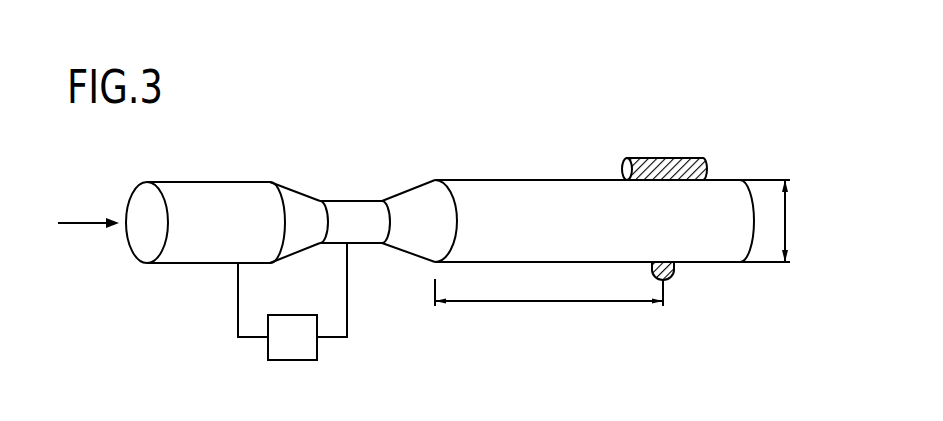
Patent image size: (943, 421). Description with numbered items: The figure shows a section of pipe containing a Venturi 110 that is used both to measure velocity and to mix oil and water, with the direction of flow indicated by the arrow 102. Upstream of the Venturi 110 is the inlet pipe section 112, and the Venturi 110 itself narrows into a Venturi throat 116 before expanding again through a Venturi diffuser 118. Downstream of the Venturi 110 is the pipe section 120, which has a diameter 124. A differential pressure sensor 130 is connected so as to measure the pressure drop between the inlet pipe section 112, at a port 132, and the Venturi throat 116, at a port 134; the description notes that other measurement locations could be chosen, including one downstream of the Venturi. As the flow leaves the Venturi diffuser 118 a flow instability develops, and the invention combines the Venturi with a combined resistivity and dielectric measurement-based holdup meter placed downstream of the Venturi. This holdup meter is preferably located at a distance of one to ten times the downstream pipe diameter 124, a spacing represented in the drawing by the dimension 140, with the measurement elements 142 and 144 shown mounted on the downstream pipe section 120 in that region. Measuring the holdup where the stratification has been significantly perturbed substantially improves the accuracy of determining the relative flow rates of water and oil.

The arrow indicating direction of flow 102 is at (62, 223).
The Venturi 110 is at (379, 178).
The pipe section 112 is at (191, 203).
The Venturi throat 116 is at (345, 212).
The Venturi diffuser 118 is at (415, 202).
The pipe section 120 is at (558, 183).
The diameter 124 is at (812, 221).
The differential pressure sensor 130 is at (307, 353).
The port 132 is at (232, 268).
The port 134 is at (355, 249).
The distance 3-10d 140 is at (549, 290).
The sensor 142 is at (680, 283).
The sensor 144 is at (683, 157).